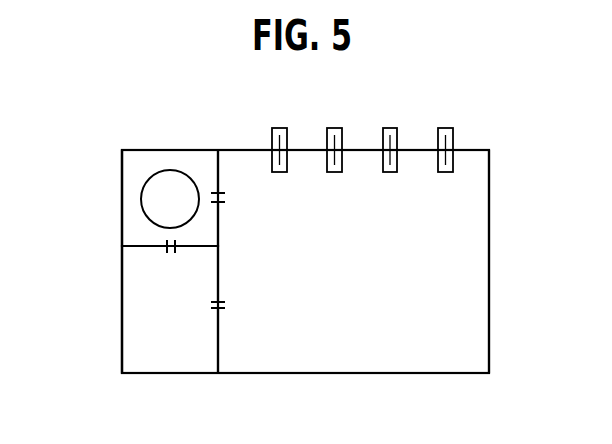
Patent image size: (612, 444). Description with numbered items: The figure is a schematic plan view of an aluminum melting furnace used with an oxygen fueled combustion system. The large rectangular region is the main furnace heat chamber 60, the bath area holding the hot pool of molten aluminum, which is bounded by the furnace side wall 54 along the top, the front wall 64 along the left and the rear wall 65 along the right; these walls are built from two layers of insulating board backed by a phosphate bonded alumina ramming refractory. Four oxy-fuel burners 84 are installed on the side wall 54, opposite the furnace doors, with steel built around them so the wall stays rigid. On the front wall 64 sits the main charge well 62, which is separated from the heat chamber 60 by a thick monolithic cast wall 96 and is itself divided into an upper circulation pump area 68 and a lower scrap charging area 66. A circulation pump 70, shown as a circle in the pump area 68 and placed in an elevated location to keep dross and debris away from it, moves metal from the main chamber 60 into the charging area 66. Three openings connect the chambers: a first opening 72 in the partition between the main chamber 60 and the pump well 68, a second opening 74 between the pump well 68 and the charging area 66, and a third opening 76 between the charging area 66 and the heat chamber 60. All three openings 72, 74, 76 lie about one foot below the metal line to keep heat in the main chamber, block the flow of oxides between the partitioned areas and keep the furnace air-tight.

The furnace side wall 54 is at (477, 148).
The main furnace heat chamber 60 is at (415, 347).
The main charge well 62 is at (121, 235).
The front wall 64 is at (122, 207).
The rear wall 65 is at (490, 273).
The charging area 66 is at (133, 345).
The circulation pump area 68 is at (128, 170).
The circulation pump 70 is at (165, 170).
The first opening 72 is at (217, 192).
The second opening 74 is at (165, 252).
The third opening 76 is at (215, 312).
The oxy-fuel burners 84 is at (335, 128).
The separating wall 96 is at (220, 350).